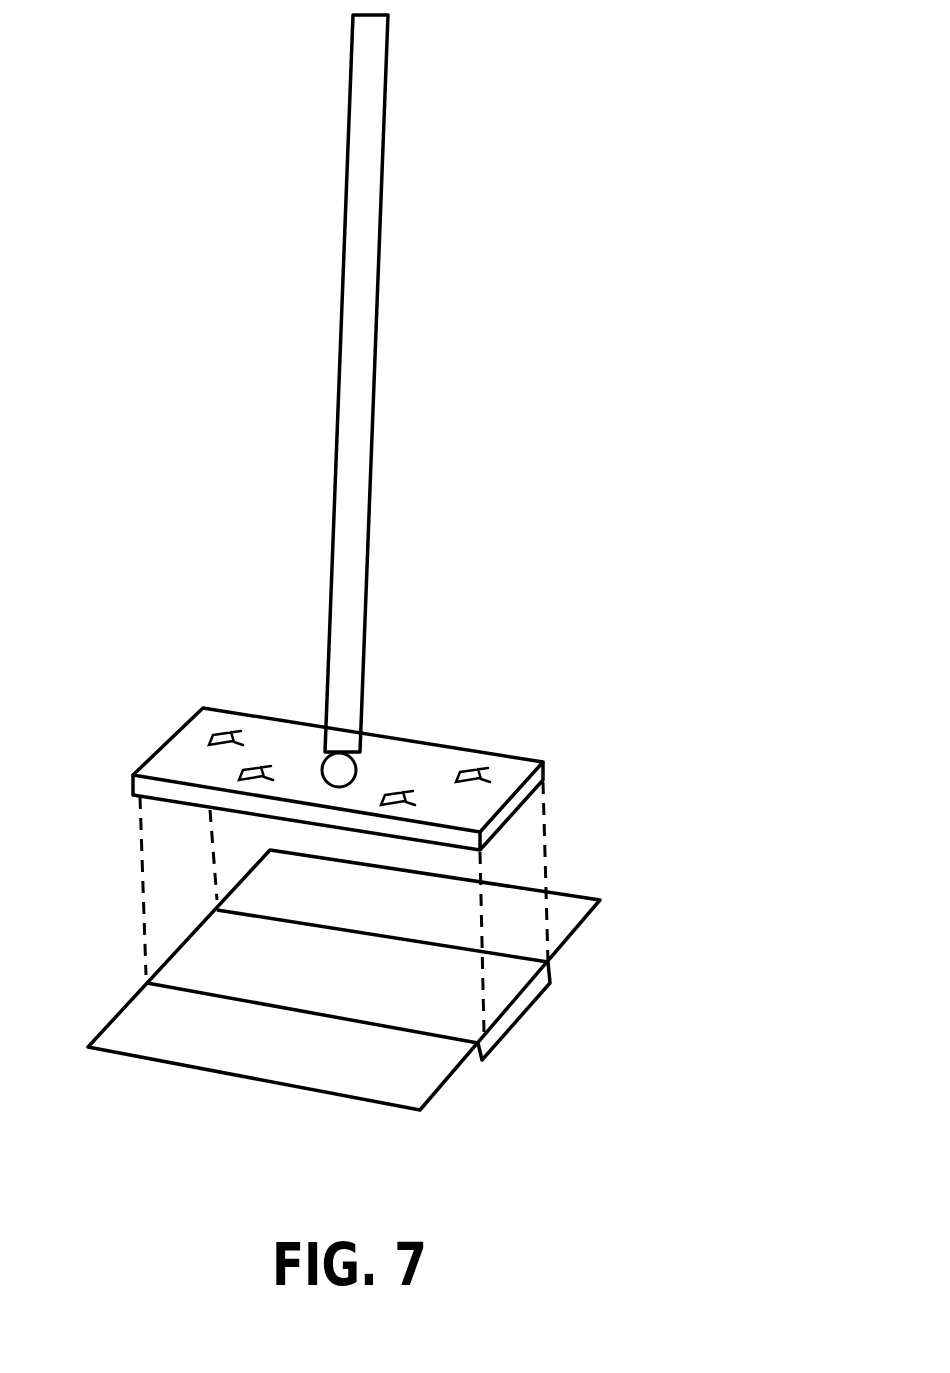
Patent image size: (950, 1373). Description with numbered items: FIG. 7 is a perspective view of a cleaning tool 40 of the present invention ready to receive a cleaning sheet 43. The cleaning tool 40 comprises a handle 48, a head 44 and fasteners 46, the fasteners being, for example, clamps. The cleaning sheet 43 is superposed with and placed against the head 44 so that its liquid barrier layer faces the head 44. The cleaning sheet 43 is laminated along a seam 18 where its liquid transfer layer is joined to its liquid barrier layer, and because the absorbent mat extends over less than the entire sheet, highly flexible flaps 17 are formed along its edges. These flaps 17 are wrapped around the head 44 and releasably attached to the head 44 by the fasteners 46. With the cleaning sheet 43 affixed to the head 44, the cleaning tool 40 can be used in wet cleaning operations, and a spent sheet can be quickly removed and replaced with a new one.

The cleaning tool 40 is at (510, 463).
The handle 48 is at (368, 302).
The fasteners 46 is at (440, 745).
The head 44 is at (170, 737).
The cleaning sheet 43 is at (530, 1012).
The flaps 17 is at (450, 1077).
The seam 18 is at (178, 990).